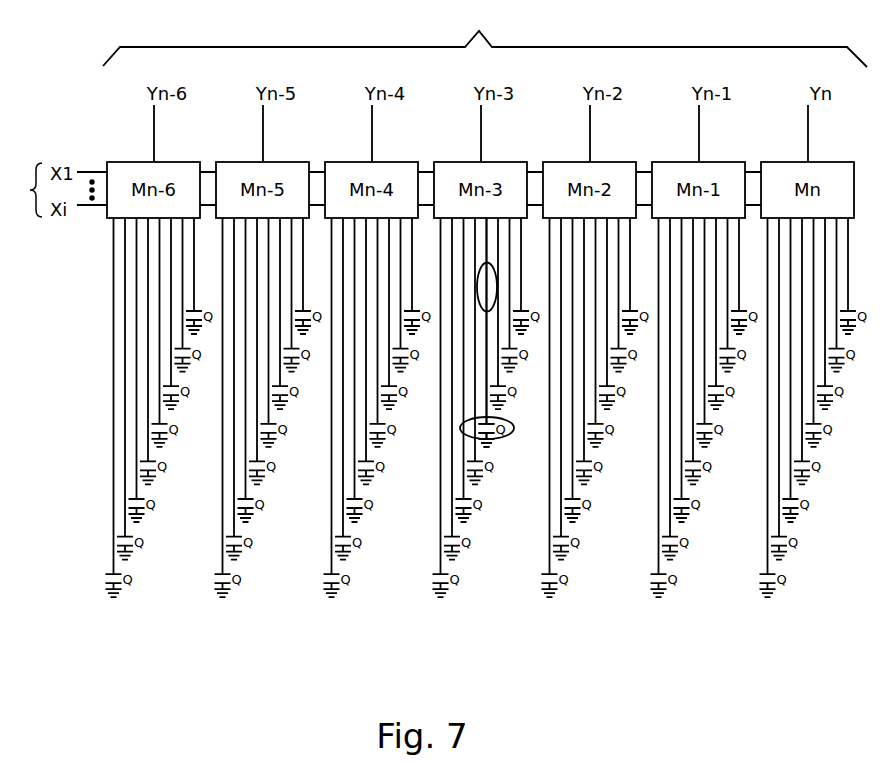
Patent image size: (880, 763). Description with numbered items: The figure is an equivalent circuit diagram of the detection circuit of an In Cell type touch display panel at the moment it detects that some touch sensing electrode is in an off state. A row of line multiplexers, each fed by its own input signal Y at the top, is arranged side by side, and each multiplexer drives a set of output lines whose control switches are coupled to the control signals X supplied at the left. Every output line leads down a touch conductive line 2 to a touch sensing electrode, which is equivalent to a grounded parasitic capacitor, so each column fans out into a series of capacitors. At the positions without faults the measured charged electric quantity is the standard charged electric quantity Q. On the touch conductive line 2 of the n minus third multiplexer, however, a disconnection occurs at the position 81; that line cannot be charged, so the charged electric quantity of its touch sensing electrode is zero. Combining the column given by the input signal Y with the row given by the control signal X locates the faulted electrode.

The position 81 is at (498, 265).
The touch conductive line 2 is at (485, 335).
The standard charged electric quantity Q is at (487, 432).
The control signal X is at (27, 190).
The input signal Y is at (485, 38).